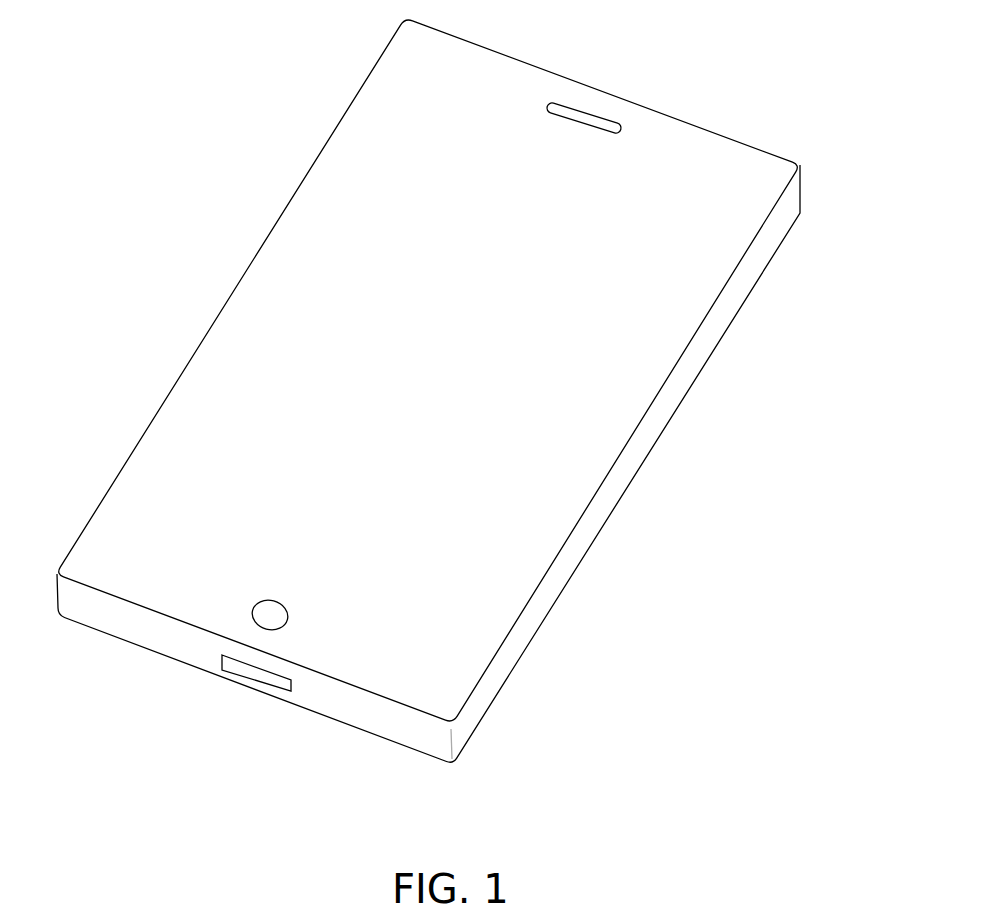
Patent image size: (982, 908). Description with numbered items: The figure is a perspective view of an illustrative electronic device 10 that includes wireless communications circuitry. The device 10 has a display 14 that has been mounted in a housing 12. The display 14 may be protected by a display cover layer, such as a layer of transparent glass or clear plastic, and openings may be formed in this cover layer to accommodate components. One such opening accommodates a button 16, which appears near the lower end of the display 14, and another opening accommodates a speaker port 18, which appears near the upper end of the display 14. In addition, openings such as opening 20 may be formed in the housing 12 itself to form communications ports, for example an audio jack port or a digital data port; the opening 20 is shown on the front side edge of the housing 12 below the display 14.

The electronic device 10 is at (800, 39).
The housing 12 is at (772, 235).
The display 14 is at (273, 326).
The button 16 is at (287, 621).
The speaker port 18 is at (583, 112).
The opening 20 is at (252, 681).